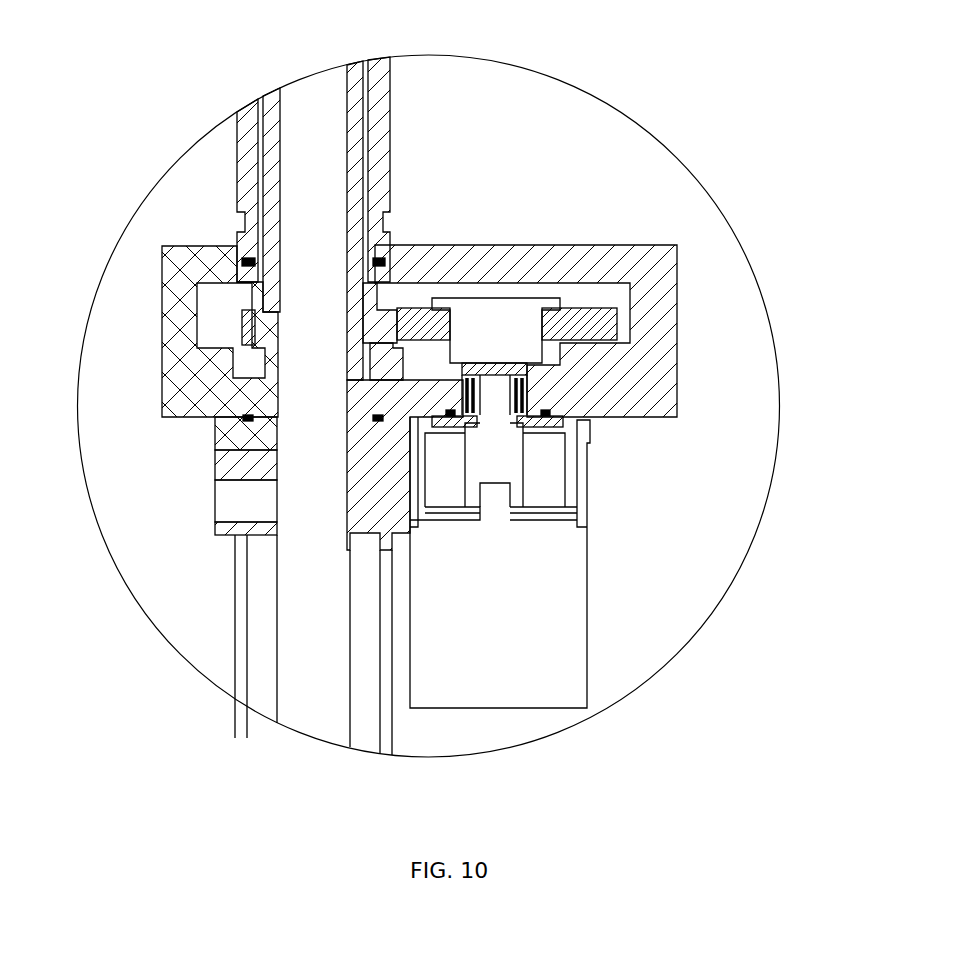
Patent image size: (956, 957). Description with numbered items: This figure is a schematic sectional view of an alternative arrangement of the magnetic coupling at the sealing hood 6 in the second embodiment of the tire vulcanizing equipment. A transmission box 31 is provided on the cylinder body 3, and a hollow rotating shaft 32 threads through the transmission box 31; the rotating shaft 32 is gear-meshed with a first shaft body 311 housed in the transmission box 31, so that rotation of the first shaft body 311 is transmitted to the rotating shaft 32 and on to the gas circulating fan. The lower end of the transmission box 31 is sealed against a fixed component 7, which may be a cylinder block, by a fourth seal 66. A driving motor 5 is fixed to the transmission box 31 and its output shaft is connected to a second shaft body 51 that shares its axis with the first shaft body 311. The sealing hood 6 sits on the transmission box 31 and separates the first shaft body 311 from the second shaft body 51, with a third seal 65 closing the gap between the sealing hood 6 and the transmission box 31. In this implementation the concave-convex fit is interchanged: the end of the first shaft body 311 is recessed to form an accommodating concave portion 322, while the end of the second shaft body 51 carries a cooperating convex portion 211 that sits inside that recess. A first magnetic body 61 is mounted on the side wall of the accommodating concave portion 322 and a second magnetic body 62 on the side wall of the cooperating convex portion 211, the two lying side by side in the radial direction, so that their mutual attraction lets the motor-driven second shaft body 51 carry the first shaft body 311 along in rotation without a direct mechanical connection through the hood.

The cylinder body 3 is at (250, 140).
The rotating shaft 32 is at (277, 102).
The transmission box 31 is at (193, 262).
The first shaft body 311 is at (503, 320).
The accommodating concave portion 322 is at (612, 316).
The first magnetic body 61 is at (553, 350).
The second magnetic body 62 is at (530, 385).
The third seal 65 is at (547, 418).
The sealing hood 6 is at (513, 427).
The fixed component 7 is at (227, 430).
The fourth seal 66 is at (213, 472).
The driving motor 5 is at (500, 677).
The second shaft body 51 is at (505, 460).
The cooperating convex portion 211 is at (552, 420).